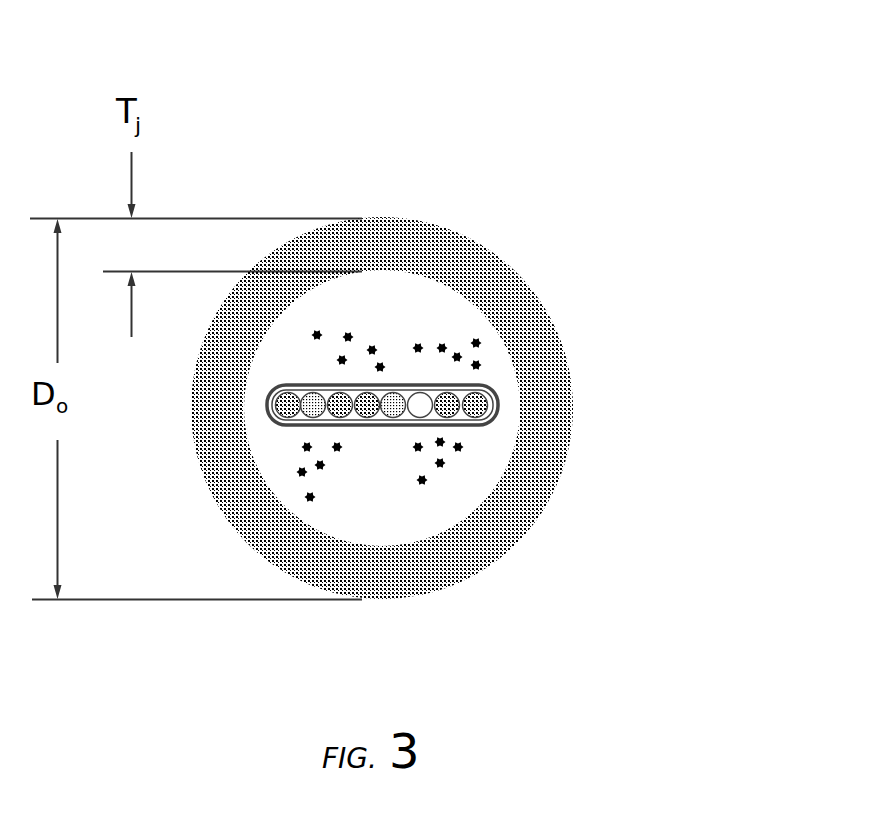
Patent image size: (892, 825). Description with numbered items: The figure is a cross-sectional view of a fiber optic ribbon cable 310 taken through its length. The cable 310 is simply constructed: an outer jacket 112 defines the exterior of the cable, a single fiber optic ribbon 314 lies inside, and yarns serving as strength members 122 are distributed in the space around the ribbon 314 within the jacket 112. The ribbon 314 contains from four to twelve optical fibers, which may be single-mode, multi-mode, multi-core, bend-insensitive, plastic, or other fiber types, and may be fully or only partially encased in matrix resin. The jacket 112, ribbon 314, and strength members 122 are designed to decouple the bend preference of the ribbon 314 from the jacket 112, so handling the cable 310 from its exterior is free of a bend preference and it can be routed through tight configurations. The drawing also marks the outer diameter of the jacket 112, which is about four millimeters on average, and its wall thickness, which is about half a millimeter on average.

The cable 310 is at (459, 306).
The jacket 112 is at (515, 495).
The fiber optic ribbon 314 is at (475, 402).
The strength members 122 is at (433, 299).